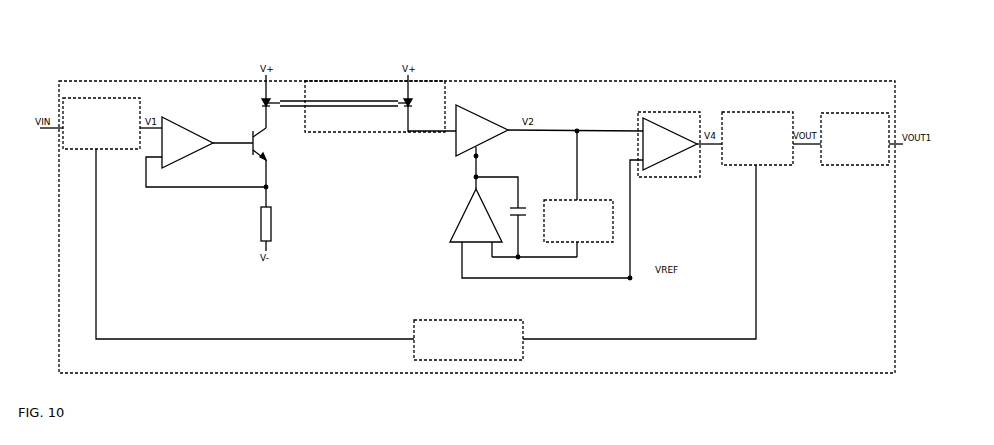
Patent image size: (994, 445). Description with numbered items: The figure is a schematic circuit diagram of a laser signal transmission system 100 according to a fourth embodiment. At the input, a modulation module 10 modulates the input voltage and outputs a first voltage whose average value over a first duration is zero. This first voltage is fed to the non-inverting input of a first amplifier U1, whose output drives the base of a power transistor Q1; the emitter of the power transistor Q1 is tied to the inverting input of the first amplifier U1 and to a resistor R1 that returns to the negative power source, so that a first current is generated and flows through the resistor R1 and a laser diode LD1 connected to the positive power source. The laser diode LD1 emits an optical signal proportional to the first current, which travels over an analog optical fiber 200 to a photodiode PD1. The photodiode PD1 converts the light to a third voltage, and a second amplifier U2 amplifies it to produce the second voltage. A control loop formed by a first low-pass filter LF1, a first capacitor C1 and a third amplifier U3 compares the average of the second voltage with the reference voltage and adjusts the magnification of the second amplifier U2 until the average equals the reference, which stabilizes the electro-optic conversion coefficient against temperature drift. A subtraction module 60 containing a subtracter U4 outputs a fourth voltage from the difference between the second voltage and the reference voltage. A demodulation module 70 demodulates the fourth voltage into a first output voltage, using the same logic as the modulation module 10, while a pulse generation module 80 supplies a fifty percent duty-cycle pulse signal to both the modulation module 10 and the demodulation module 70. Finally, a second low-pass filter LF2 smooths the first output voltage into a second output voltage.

The laser signal transmission system 100 is at (527, 81).
The analog optical fiber 200 is at (340, 100).
The modulation module 10 is at (101, 123).
The subtraction module 60 is at (661, 112).
The demodulation module 70 is at (757, 138).
The pulse generation module 80 is at (468, 340).
The first amplifier U1 is at (187, 142).
The second amplifier U2 is at (482, 130).
The third amplifier U3 is at (476, 215).
The subtracter U4 is at (670, 144).
The power transistor Q1 is at (264, 131).
The resistor R1 is at (273, 219).
The first capacitor C1 is at (501, 217).
The laser diode LD1 is at (258, 104).
The photodiode PD1 is at (415, 103).
The first low-pass filter LF1 is at (578, 194).
The second low-pass filter LF2 is at (855, 139).